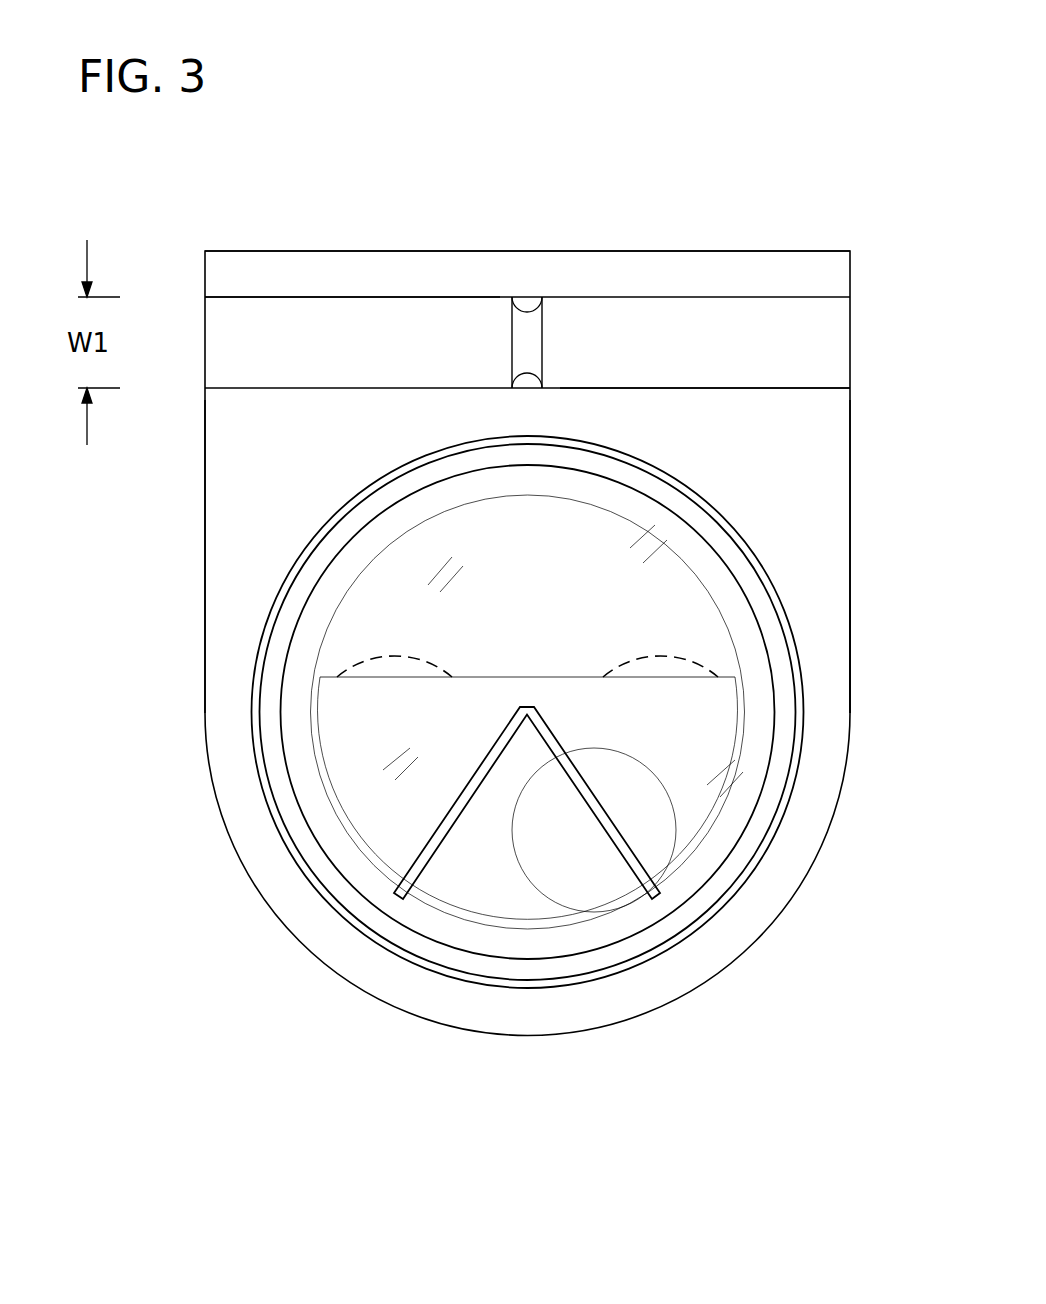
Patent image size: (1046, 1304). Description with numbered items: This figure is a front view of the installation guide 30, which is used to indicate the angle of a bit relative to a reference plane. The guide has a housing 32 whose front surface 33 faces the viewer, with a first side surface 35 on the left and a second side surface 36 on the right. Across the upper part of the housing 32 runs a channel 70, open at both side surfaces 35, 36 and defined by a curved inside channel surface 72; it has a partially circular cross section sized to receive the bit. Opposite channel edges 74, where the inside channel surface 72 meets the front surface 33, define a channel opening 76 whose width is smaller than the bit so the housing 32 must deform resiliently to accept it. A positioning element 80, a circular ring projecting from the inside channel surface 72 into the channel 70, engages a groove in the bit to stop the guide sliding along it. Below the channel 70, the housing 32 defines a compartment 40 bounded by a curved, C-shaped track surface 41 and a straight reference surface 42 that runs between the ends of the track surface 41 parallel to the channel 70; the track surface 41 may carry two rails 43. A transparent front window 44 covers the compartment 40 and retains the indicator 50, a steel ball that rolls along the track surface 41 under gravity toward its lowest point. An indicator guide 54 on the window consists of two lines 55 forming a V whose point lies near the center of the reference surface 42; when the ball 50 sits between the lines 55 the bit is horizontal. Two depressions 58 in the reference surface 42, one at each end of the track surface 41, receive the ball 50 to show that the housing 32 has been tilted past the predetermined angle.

The installation guide 30 is at (758, 1025).
The housing 32 is at (828, 643).
The front surface 33 is at (807, 449).
The first side surface 35 is at (204, 507).
The second side surface 36 is at (852, 543).
The compartment 40 is at (688, 714).
The track surface 41 is at (718, 810).
The reference surface 42 is at (533, 677).
The rails 43 is at (320, 767).
The front window 44 is at (297, 597).
The indicator 50 is at (525, 910).
The indicator guide 54 is at (515, 799).
The lines 55 is at (548, 735).
The depressions 58 is at (392, 655).
The channel 70 is at (808, 329).
The inside channel surface 72 is at (826, 370).
The channel edges 74 is at (833, 297).
The channel opening 76 is at (236, 324).
The positioning element 80 is at (527, 300).